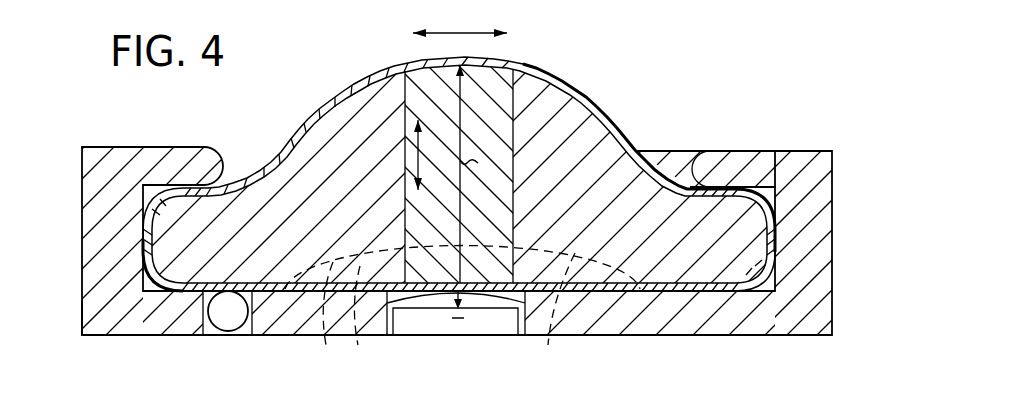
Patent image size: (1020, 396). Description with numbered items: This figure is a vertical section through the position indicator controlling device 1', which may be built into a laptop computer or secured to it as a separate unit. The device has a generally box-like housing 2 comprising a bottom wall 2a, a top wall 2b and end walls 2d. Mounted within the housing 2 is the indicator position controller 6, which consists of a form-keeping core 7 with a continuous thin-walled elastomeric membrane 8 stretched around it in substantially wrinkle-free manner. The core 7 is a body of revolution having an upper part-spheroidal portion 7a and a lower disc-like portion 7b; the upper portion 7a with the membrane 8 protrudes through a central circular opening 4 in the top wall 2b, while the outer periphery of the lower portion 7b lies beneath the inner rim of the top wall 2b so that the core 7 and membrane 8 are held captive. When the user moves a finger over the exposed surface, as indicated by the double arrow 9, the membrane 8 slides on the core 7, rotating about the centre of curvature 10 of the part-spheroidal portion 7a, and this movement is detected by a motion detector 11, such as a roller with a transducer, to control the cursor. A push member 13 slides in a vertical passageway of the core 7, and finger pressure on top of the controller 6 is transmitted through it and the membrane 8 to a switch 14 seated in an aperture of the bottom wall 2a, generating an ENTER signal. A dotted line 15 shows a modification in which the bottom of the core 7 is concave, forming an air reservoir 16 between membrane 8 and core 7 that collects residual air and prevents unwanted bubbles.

The position indicator controlling device 1' is at (81, 345).
The housing 2 is at (708, 343).
The bottom wall 2a is at (283, 318).
The top wall 2b is at (730, 173).
The end walls 2d is at (105, 232).
The central circular opening 4 is at (690, 170).
The indicator position controller 6 is at (591, 92).
The form-keeping core 7 is at (370, 106).
The upper part-spheroidal portion 7a is at (531, 103).
The lower disc-like portion 7b is at (613, 247).
The membrane 8 is at (296, 132).
The double arrow 9 is at (463, 33).
The centre of curvature 10 is at (465, 320).
The motion detector 11 is at (227, 318).
The push member 13 is at (492, 212).
The switch 14 is at (432, 318).
The dotted line 15 is at (326, 342).
The air reservoir 16 is at (350, 338).